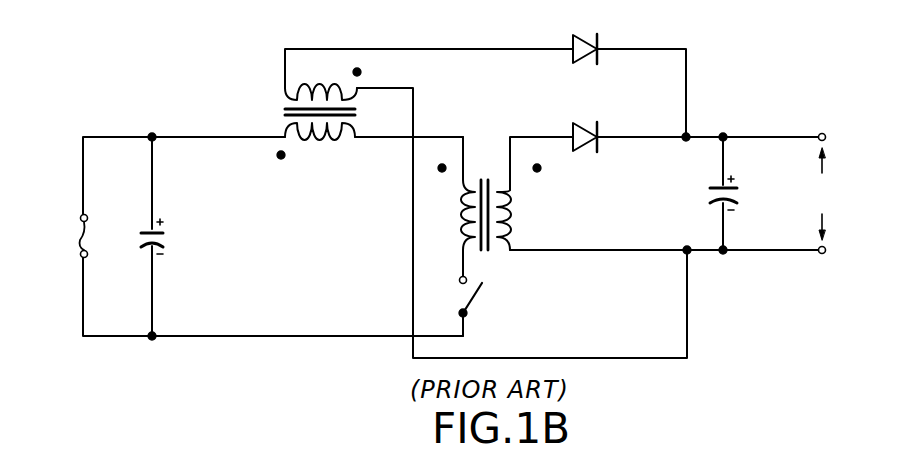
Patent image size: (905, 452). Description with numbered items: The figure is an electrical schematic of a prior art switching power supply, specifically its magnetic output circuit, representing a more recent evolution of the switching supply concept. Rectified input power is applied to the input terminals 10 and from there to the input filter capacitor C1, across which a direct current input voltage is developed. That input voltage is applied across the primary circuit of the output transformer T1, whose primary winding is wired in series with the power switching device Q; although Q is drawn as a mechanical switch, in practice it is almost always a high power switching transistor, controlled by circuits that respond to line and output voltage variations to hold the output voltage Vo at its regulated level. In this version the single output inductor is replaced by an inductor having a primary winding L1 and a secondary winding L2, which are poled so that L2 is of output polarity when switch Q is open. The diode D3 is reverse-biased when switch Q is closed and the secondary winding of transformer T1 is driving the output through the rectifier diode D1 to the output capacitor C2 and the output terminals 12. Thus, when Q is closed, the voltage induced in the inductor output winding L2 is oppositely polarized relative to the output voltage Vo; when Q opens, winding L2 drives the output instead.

The input terminals 10 is at (80, 240).
The output terminals 12 is at (826, 134).
The input filter capacitor C1 is at (173, 236).
The output capacitor C2 is at (743, 193).
The primary winding of the inductor L1 is at (316, 150).
The secondary winding of the inductor L2 is at (323, 85).
The output transformer T1 is at (489, 203).
The power switching device Q is at (481, 307).
The output rectifier diode D1 is at (589, 124).
The diode D3 is at (589, 35).
The output voltage Vo is at (821, 194).